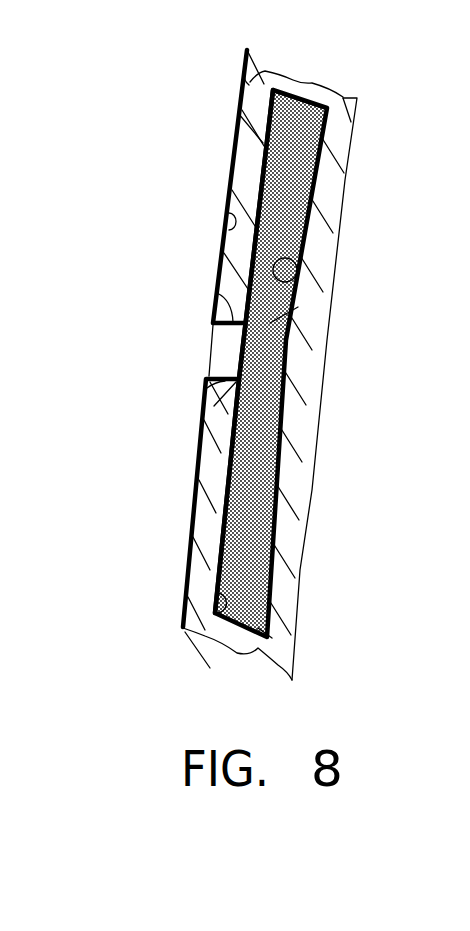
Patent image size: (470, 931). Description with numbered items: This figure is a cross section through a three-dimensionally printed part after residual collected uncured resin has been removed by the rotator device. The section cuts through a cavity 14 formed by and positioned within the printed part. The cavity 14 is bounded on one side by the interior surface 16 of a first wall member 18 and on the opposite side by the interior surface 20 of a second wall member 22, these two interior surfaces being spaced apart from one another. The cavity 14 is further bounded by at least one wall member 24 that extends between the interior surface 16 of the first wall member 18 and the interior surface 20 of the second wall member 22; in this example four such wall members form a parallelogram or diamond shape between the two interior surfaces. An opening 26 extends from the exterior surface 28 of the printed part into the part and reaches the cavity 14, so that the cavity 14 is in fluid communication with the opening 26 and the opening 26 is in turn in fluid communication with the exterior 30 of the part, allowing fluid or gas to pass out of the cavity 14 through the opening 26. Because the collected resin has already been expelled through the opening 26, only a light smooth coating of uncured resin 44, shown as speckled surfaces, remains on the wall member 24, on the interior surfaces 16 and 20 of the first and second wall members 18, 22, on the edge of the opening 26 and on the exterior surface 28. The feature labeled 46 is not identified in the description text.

The cavity 14 is at (290, 240).
The interior surface of first wall member 16 is at (263, 158).
The first wall member 18 is at (238, 113).
The interior surface of second wall member 20 is at (322, 170).
The second wall member 22 is at (338, 200).
The wall member 24 is at (312, 83).
The opening 26 is at (212, 350).
The exterior surface 28 is at (264, 72).
The exterior 30 is at (172, 336).
The light smooth coating of uncured resin 44 is at (225, 235).
The chamfer 46 is at (217, 290).